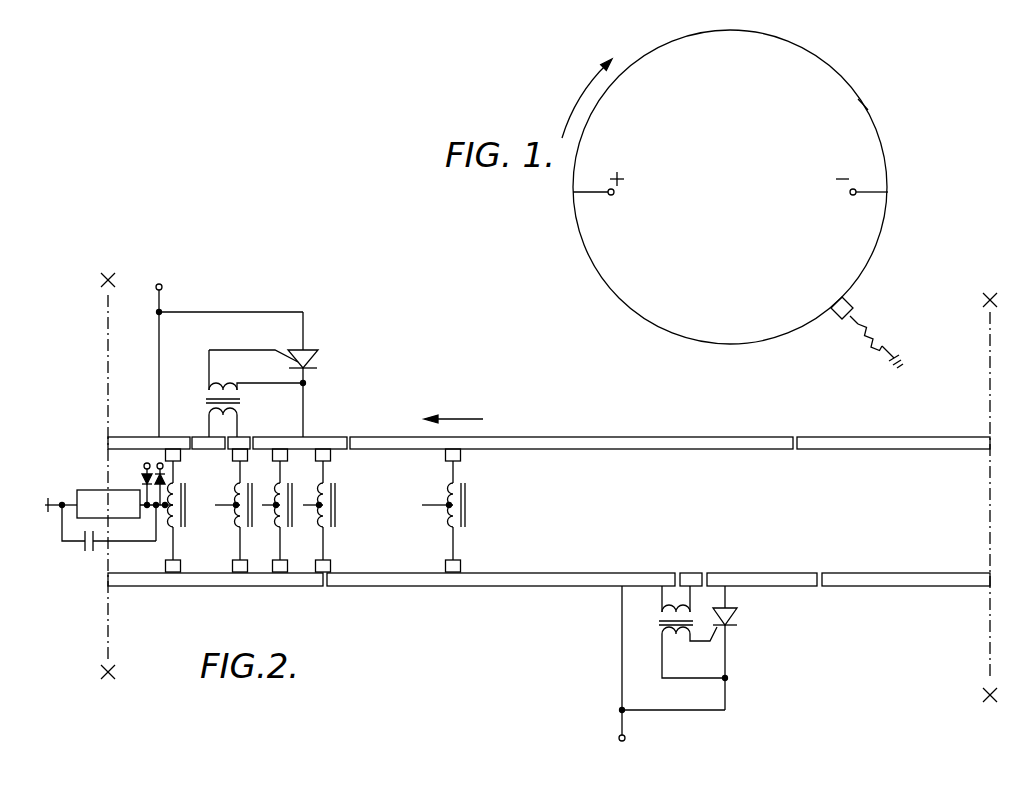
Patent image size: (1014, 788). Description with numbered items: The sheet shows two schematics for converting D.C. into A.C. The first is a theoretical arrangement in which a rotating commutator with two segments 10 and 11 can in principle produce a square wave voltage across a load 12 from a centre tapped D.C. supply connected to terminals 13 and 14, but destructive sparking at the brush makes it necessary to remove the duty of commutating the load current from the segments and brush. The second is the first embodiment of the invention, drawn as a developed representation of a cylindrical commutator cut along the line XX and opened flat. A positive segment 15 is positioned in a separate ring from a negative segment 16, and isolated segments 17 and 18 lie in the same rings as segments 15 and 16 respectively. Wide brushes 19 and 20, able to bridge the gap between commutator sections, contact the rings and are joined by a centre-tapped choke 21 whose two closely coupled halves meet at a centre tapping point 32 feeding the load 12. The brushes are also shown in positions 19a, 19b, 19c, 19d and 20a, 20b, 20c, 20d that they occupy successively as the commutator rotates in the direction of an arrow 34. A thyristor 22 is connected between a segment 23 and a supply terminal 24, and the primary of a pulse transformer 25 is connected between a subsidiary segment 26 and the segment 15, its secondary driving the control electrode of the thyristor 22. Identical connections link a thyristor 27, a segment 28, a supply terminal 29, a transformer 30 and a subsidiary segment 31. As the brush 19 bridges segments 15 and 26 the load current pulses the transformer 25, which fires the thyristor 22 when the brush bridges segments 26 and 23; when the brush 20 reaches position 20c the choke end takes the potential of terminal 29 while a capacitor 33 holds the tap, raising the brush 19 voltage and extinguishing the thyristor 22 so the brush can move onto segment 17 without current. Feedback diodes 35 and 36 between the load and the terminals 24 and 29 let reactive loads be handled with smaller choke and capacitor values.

In FIG. 1, the commutator segment 10 is at (621, 74).
In FIG. 1, the commutator segment 11 is at (858, 99).
In FIG. 1, the load 12 is at (866, 340).
In FIG. 2, the load 12 is at (90, 490).
In FIG. 1, the terminal 13 is at (612, 196).
In FIG. 1, the terminal 14 is at (851, 196).
In FIG. 2, the positive segment 15 is at (151, 438).
In FIG. 2, the negative segment 16 is at (413, 589).
In FIG. 2, the isolated segment 17 is at (707, 438).
In FIG. 2, the isolated segment 18 is at (211, 588).
In FIG. 2, the brush 19 is at (179, 438).
In FIG. 2, the brush position 19a is at (237, 465).
In FIG. 2, the brush position 19b is at (284, 487).
In FIG. 2, the brush position 19c is at (333, 468).
In FIG. 2, the brush position 19d is at (452, 465).
In FIG. 2, the brush 20 is at (180, 567).
In FIG. 2, the brush position 20a is at (249, 566).
In FIG. 2, the brush position 20b is at (289, 565).
In FIG. 2, the brush position 20c is at (331, 564).
In FIG. 2, the brush position 20d is at (446, 566).
In FIG. 2, the centre-tapped choke 21 is at (185, 505).
In FIG. 2, the thyristor 22 is at (316, 356).
In FIG. 2, the segment 23 is at (333, 442).
In FIG. 2, the supply terminal 24 is at (164, 289).
In FIG. 2, the pulse transformer 25 is at (196, 414).
In FIG. 2, the subsidiary segment 26 is at (243, 438).
In FIG. 2, the thyristor 27 is at (735, 619).
In FIG. 2, the segment 28 is at (790, 571).
In FIG. 2, the supply terminal 29 is at (619, 740).
In FIG. 2, the transformer 30 is at (653, 622).
In FIG. 2, the subsidiary segment 31 is at (689, 571).
In FIG. 2, the centre tapping point 32 is at (161, 522).
In FIG. 2, the capacitor 33 is at (80, 550).
In FIG. 2, the arrow 34 is at (470, 422).
In FIG. 2, the feedback diode 35 is at (144, 482).
In FIG. 2, the feedback diode 36 is at (168, 481).